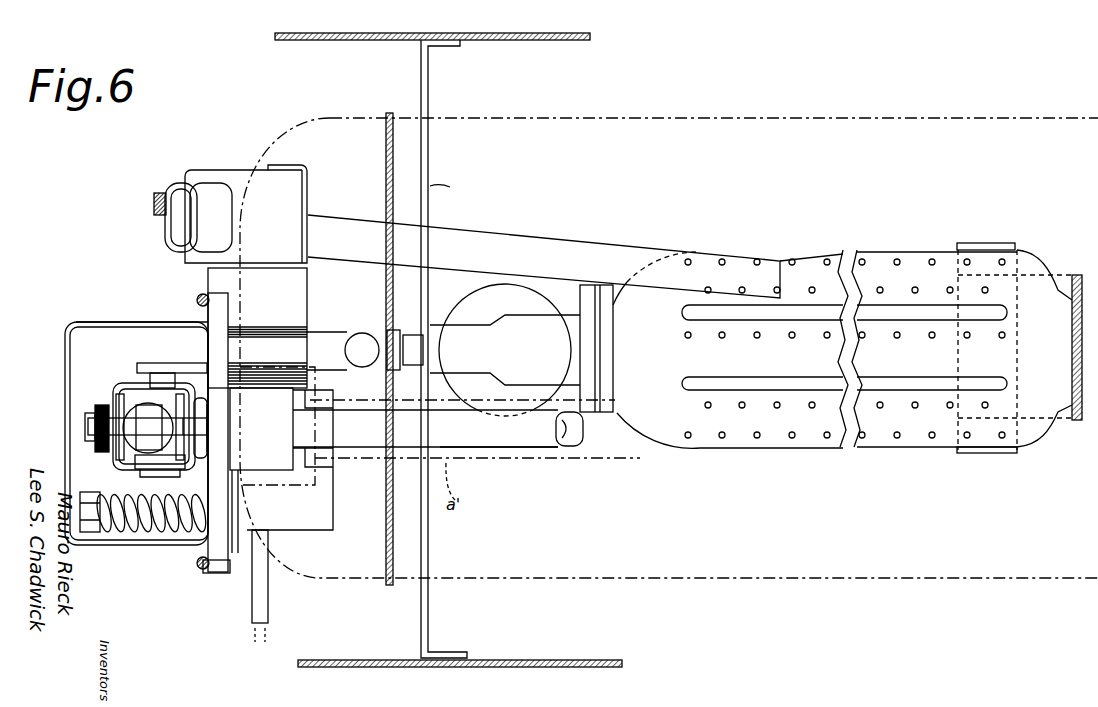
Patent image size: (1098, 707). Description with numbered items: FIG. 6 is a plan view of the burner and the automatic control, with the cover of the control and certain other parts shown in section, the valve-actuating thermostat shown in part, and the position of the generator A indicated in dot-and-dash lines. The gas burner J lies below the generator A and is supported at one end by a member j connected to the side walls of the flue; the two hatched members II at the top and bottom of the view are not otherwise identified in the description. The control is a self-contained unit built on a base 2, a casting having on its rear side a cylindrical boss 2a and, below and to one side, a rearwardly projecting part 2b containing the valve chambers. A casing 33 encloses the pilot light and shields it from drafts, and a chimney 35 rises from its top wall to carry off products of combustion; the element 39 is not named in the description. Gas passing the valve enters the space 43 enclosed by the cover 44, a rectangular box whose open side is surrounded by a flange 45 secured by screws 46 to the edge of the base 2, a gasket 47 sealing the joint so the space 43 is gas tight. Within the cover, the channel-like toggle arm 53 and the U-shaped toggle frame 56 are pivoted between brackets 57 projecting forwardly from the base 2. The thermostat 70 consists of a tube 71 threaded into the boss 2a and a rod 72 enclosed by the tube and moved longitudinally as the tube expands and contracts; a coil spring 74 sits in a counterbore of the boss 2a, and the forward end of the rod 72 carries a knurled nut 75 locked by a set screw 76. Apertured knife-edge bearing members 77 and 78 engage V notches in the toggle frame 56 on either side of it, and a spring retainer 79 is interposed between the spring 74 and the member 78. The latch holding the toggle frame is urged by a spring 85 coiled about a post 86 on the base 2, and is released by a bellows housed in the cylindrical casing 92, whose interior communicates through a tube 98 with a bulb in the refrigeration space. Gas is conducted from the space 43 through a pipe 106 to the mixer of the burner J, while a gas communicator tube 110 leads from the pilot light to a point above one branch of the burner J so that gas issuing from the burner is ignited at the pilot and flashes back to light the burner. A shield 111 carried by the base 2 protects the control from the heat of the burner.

The base 2 is at (229, 313).
The cylindrical boss 2a is at (261, 429).
The rearwardly projecting part 2b is at (295, 297).
The casing 33 is at (243, 182).
The chimney 35 is at (165, 236).
The knob 39 is at (153, 207).
The space 43 is at (65, 375).
The cover 44 is at (132, 322).
The flange 45 is at (202, 300).
The screws 46 is at (203, 570).
The gasket 47 is at (222, 574).
The toggle arm 53 is at (150, 410).
The toggle frame 56 is at (145, 470).
The brackets 57 is at (170, 363).
The thermostat 70 is at (473, 450).
The tube 71 is at (540, 433).
The rod 72 is at (584, 432).
The coil spring 74 is at (205, 446).
The knurled nut 75 is at (102, 452).
The set screw 76 is at (88, 432).
The apertured bearing member 77 is at (113, 398).
The apertured bearing member 78 is at (183, 430).
The spring retainer 79 is at (198, 406).
The spring 85 is at (170, 531).
The post 86 is at (140, 523).
The cylindrical casing 92 is at (322, 490).
The tube 98 is at (268, 597).
The pipe 106 is at (372, 345).
The gas communicator tube 110 is at (523, 241).
The shield 111 is at (386, 193).
The generator A is at (783, 117).
The gas burner J is at (808, 448).
The member j is at (1076, 276).
The rails II is at (515, 33).